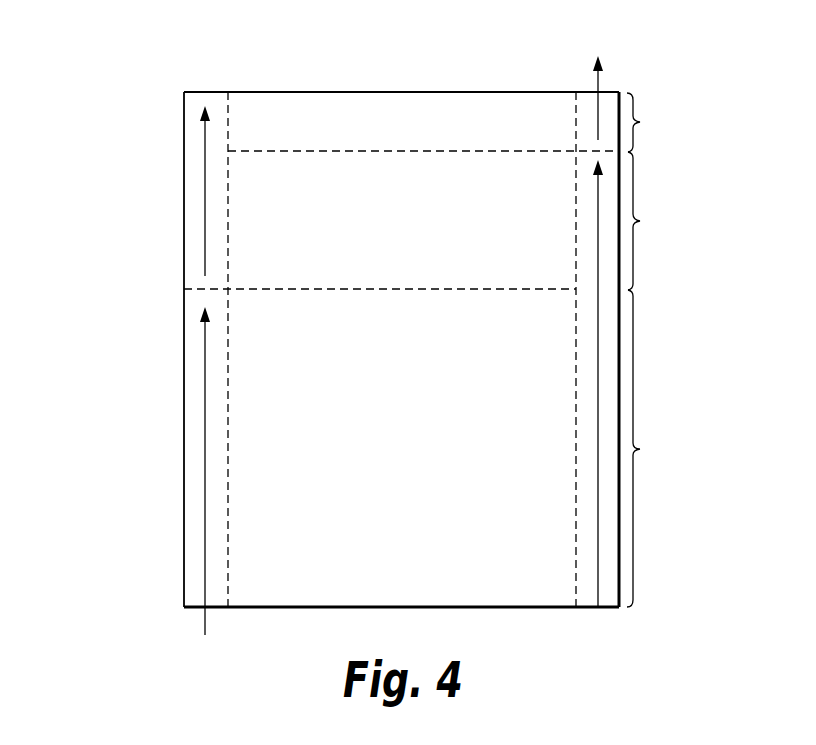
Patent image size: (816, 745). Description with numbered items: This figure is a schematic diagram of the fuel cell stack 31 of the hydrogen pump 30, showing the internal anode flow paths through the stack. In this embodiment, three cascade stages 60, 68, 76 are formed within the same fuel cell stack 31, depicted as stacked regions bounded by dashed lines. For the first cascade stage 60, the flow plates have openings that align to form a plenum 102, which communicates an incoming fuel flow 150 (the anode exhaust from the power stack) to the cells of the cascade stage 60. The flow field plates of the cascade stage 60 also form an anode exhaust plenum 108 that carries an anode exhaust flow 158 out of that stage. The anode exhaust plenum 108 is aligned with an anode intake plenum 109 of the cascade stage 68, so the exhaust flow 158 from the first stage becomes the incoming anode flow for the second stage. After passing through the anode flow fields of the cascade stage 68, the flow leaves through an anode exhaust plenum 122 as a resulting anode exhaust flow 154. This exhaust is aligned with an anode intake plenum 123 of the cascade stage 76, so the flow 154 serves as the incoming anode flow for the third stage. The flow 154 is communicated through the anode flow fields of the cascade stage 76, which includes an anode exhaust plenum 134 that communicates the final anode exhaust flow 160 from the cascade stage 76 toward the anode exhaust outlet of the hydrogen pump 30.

The hydrogen pump 30 is at (158, 64).
The fuel cell stack 31 is at (396, 84).
The cascade stage 60 is at (649, 448).
The cascade stage 68 is at (650, 221).
The cascade stage 76 is at (649, 122).
The plenum 102 is at (192, 537).
The anode exhaust plenum 108 is at (610, 337).
The anode intake plenum 109 is at (608, 201).
The anode exhaust plenum 122 is at (195, 252).
The anode intake plenum 123 is at (193, 135).
The anode exhaust plenum 134 is at (612, 103).
The incoming fuel flow 150 is at (205, 452).
The anode exhaust flow 154 is at (205, 206).
The anode exhaust flow 158 is at (598, 407).
The anode exhaust flow 160 is at (600, 82).